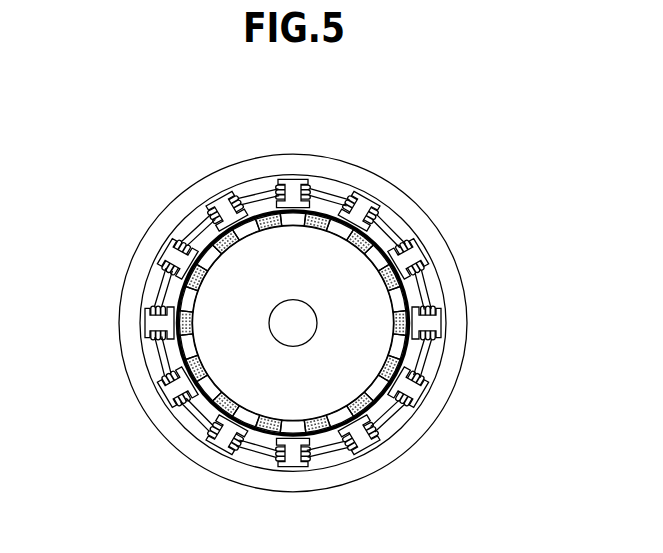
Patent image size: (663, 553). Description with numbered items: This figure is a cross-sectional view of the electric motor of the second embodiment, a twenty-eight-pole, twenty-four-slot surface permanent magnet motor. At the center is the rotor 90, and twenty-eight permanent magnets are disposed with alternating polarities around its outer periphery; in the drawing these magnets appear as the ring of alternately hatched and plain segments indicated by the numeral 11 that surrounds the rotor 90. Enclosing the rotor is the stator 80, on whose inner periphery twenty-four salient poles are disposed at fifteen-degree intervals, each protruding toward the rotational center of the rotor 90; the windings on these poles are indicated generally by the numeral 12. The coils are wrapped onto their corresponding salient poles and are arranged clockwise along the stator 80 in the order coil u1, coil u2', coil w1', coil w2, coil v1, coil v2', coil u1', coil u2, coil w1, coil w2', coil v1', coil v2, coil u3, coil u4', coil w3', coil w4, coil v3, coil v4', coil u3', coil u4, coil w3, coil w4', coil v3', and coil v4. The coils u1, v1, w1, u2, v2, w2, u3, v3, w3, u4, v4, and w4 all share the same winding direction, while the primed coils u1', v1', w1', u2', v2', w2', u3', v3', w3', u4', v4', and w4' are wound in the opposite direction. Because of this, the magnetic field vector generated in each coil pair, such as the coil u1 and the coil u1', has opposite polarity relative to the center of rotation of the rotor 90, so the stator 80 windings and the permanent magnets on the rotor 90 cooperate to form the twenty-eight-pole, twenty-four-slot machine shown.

The stator 80 is at (362, 177).
The rotor 90 is at (281, 385).
The permanent magnet 11 is at (382, 267).
The coil winding 12 is at (257, 202).
The coil u1 is at (293, 157).
The coil u1' is at (479, 323).
The coil u2 is at (464, 358).
The coil u2' is at (349, 156).
The coil u3 is at (293, 484).
The coil u3' is at (109, 323).
The coil u4 is at (114, 286).
The coil u4' is at (241, 485).
The coil v1 is at (444, 249).
The coil v1' is at (384, 460).
The coil v2 is at (343, 481).
The coil v2' is at (476, 287).
The coil v3 is at (144, 393).
The coil v3' is at (208, 192).
The coil v4 is at (250, 161).
The coil v4' is at (117, 363).
The coil w1 is at (445, 393).
The coil w1' is at (384, 191).
The coil w2 is at (417, 213).
The coil w2' is at (419, 430).
The coil w3 is at (142, 250).
The coil w3' is at (207, 460).
The coil w4 is at (172, 431).
The coil w4' is at (170, 213).